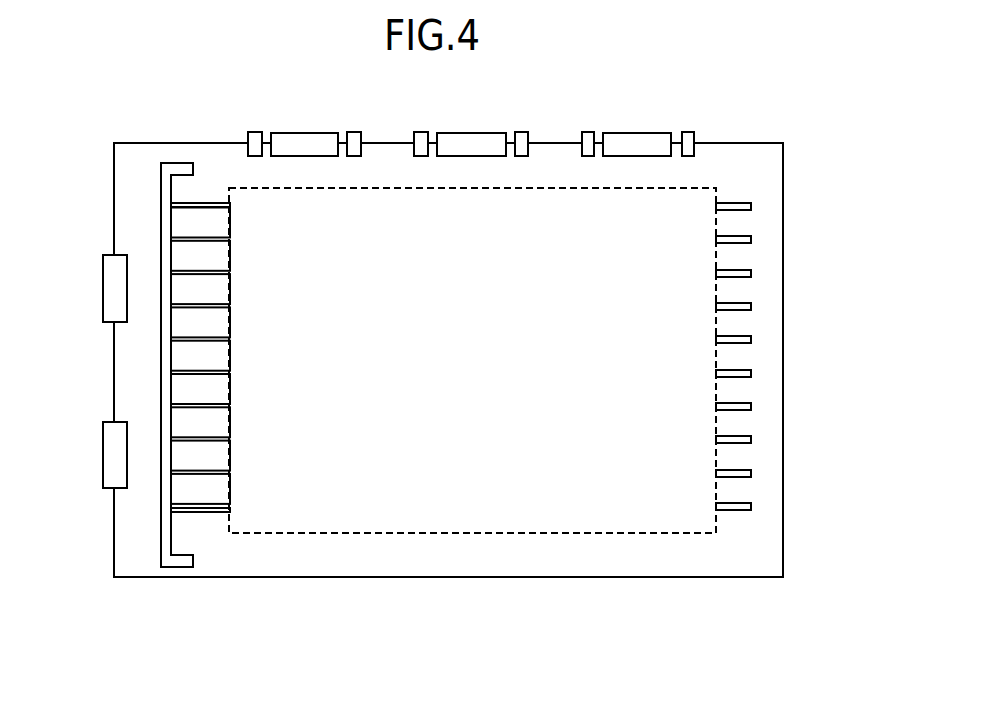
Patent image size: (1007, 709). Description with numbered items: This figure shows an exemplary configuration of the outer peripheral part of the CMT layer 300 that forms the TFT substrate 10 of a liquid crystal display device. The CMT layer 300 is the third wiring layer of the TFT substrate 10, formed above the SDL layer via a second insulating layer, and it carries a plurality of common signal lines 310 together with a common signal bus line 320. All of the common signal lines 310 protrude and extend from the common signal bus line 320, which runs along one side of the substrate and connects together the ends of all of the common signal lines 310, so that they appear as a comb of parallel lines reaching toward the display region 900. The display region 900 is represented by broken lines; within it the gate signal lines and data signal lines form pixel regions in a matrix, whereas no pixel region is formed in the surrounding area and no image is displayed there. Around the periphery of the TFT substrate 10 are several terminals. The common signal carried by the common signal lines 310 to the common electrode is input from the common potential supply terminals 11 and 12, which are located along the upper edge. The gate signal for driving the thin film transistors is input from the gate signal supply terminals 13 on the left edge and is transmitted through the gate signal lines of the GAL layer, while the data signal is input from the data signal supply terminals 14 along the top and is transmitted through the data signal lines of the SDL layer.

The TFT substrate 10 is at (449, 382).
The common potential supply terminal 11 is at (255, 131).
The common potential supply terminal 12 is at (690, 132).
The gate signal supply terminal 13 is at (103, 287).
The data signal supply terminal 14 is at (302, 132).
The CMT layer 300 is at (766, 353).
The common signal line 310 is at (210, 510).
The common signal bus line 320 is at (160, 550).
The display region 900 is at (482, 533).